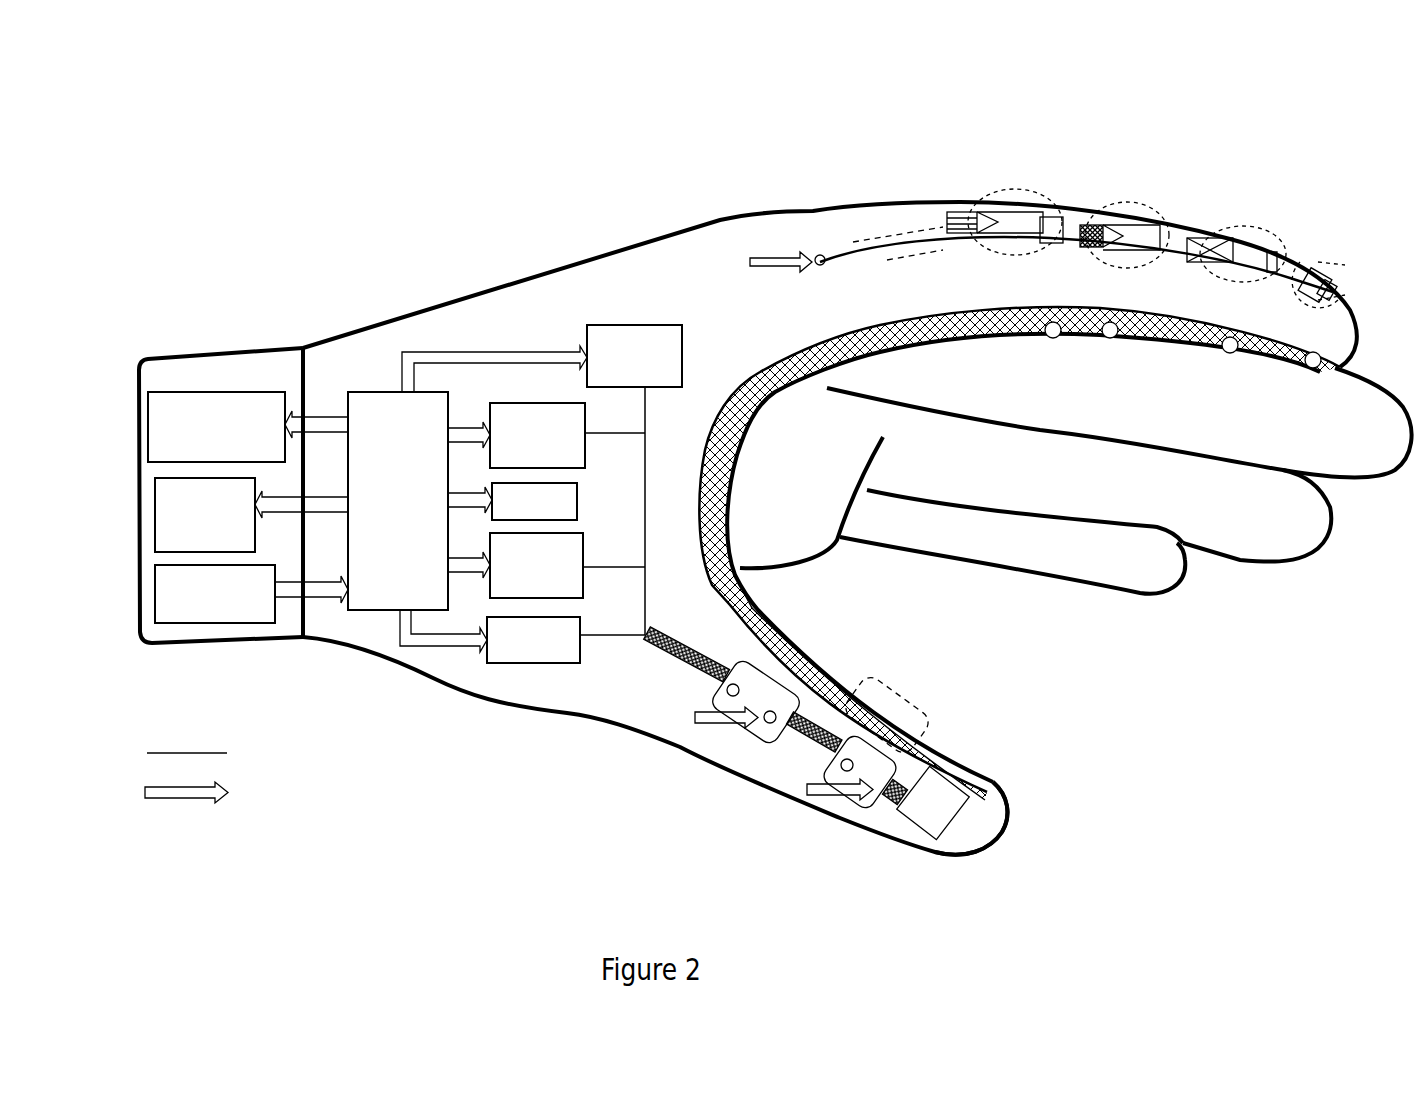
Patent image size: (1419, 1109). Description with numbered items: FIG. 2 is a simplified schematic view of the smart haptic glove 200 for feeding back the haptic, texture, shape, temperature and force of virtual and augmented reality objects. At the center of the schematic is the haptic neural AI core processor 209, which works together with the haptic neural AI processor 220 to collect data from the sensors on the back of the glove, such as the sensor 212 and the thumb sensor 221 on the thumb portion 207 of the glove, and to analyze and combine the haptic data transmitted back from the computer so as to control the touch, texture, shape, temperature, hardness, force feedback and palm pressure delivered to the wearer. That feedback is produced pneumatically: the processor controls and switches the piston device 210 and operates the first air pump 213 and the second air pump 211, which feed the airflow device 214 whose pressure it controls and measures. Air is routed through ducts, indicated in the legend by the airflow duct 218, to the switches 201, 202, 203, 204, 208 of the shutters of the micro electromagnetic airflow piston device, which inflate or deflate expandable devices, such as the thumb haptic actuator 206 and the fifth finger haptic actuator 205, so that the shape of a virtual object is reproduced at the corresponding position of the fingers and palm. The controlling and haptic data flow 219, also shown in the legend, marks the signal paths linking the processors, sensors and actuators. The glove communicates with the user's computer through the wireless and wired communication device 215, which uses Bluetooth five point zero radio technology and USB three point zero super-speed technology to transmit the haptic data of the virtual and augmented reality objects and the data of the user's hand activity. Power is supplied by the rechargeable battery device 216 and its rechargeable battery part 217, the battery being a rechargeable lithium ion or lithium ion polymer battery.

The haptic glove 200 is at (775, 524).
The switch of shutter of the micro electromagnetic airflow piston device 201 is at (887, 242).
The switch of shutter of the micro electromagnetic airflow piston device 202 is at (1012, 192).
The switch of shutter of the micro electromagnetic airflow piston device 203 is at (1140, 203).
The switch of shutter of the micro electromagnetic airflow piston device 204 is at (1245, 228).
The fifth finger haptic actuator 205 is at (1330, 255).
The thumb haptic actuator 206 is at (910, 708).
The thumb portion of glove 207 is at (1007, 793).
The switch of shutter of the micro electromagnetic airflow piston device 208 is at (750, 733).
The haptic neural AI core processor 209 is at (843, 800).
The piston device 210 is at (532, 650).
The air pump 2 211 is at (530, 582).
The sensor 212 is at (540, 492).
The air pump 1 213 is at (550, 423).
The airflow device 214 is at (637, 333).
The wireless and wired communication device 215 is at (175, 392).
The rechargeable battery device 216 is at (155, 500).
The rechargeable battery part 217 is at (197, 625).
The airflow duct (legend) 218 is at (175, 745).
The controlling and haptic data flow (legend) 219 is at (172, 793).
The haptic neural AI processor 220 is at (393, 612).
The thumb sensor 221 is at (947, 827).